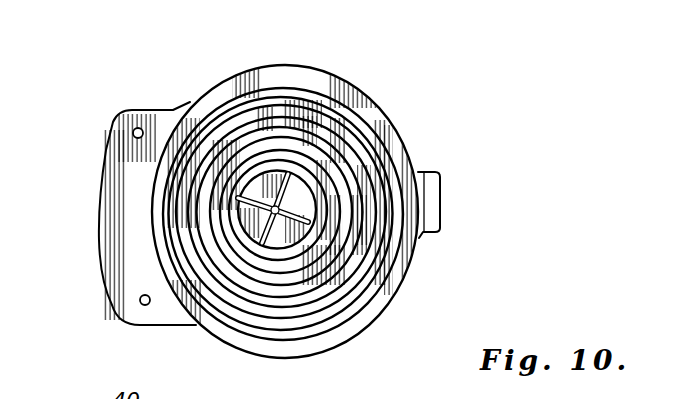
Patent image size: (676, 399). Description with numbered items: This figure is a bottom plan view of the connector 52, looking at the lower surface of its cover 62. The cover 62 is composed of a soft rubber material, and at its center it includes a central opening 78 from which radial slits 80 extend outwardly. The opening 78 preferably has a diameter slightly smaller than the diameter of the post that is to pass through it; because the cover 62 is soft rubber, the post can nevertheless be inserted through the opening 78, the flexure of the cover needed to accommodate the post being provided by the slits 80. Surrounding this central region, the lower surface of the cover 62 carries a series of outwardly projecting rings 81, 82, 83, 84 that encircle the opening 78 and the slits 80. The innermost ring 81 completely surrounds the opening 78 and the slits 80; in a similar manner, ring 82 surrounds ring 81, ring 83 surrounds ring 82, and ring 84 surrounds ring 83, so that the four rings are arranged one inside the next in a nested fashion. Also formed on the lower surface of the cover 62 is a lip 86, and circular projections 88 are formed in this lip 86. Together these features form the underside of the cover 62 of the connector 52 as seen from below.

The connector 52 is at (398, 106).
The cover 62 is at (197, 99).
The central opening 78 is at (275, 203).
The radial slits 80 is at (237, 212).
The ring 81 is at (398, 246).
The ring 82 is at (362, 283).
The ring 83 is at (345, 302).
The ring 84 is at (337, 310).
The lip 86 is at (110, 183).
The circular projections 88 is at (132, 131).